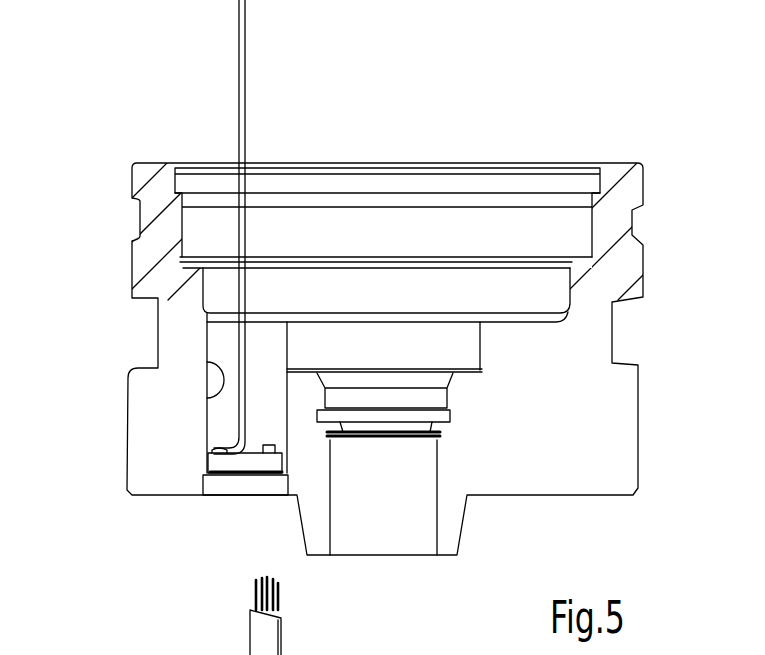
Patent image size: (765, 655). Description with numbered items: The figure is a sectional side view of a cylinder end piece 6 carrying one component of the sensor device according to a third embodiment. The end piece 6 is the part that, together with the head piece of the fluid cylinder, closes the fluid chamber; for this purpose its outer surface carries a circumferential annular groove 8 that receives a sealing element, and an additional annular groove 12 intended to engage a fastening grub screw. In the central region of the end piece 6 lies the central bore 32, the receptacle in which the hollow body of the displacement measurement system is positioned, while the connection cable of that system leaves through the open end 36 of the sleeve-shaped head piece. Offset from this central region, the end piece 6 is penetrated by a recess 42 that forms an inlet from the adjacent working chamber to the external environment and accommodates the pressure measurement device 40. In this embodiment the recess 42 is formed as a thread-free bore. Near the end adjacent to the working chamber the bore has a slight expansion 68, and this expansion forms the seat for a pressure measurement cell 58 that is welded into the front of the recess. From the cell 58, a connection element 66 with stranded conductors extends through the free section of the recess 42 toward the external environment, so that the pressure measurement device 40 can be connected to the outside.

The cylinder end piece 6 is at (610, 413).
The circumferential annular groove 8 is at (155, 303).
The additional annular groove 12 is at (125, 217).
The central bore 32 is at (438, 478).
The open end 36 is at (153, 162).
The pressure measurement device 40 is at (185, 522).
The recess 42 is at (206, 398).
The pressure measurement cell 58 is at (252, 476).
The connection element 66 is at (247, 70).
The expansion 68 is at (200, 486).